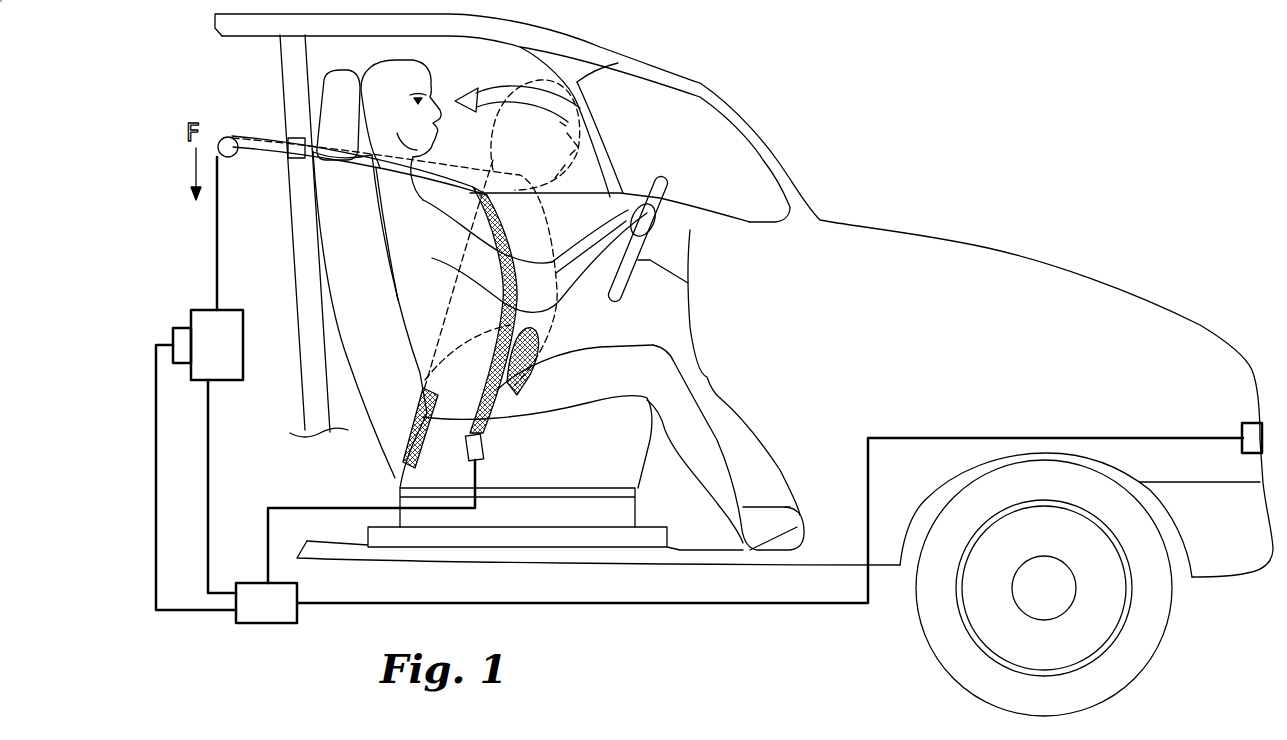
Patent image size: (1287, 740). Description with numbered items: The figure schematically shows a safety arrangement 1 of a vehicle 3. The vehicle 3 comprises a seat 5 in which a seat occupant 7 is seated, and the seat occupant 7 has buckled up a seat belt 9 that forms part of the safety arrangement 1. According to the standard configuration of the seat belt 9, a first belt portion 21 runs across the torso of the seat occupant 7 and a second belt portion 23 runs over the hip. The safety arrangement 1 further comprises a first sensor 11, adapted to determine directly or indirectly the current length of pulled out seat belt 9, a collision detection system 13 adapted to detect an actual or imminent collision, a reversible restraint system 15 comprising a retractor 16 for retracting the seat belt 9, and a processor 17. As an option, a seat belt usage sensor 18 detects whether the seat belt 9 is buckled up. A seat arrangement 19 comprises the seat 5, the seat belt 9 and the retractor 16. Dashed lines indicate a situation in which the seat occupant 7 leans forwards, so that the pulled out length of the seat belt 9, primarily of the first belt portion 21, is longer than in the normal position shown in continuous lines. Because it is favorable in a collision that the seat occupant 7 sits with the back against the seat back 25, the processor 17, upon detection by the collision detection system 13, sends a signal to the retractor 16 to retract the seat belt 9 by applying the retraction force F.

The safety arrangement 1 is at (637, 153).
The vehicle 3 is at (978, 177).
The seat 5 is at (613, 508).
The seat occupant 7 is at (450, 80).
The seat belt 9 is at (405, 302).
The first sensor 11 is at (180, 335).
The collision detection system 13 is at (1252, 423).
The reversible restraint system 15 is at (235, 357).
The retractor 16 is at (230, 290).
The processor 17 is at (257, 590).
The seat belt usage sensor 18 is at (485, 452).
The seat arrangement 19 is at (663, 390).
The first belt portion 21 is at (495, 233).
The second belt portion 23 is at (510, 392).
The seat back 25 is at (383, 294).